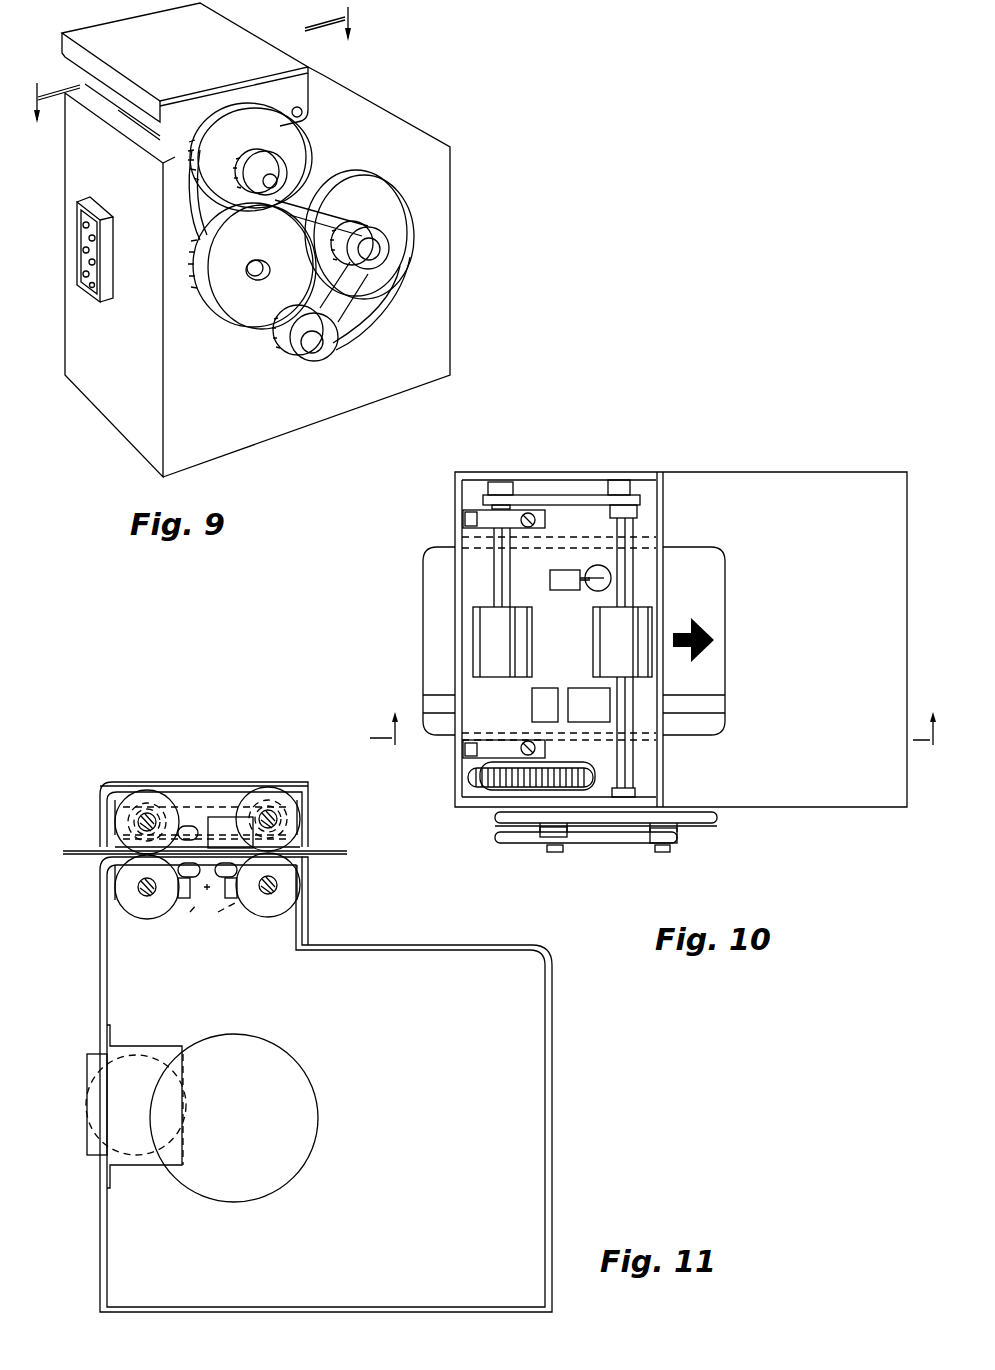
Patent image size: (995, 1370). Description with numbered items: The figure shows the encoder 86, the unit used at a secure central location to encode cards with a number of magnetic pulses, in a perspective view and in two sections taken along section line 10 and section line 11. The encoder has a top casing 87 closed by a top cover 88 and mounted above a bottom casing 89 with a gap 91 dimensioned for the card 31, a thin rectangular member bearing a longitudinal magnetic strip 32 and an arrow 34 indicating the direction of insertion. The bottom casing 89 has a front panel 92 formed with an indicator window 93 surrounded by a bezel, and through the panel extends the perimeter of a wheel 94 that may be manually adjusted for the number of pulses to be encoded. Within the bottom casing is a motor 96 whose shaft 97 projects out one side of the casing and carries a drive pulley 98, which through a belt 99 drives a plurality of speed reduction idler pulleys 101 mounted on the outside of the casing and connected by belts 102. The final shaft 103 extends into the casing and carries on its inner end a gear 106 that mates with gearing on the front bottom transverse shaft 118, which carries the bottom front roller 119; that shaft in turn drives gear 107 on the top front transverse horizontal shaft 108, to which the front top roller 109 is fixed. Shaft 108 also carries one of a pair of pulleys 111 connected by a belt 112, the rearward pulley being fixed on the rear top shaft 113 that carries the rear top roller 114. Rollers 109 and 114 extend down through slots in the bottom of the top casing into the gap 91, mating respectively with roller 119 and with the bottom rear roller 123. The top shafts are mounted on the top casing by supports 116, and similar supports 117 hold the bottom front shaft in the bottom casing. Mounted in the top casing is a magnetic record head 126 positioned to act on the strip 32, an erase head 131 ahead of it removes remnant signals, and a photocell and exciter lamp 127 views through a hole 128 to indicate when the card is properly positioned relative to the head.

In FIG. 9, the section line 10— 10 is at (192, 69).
In FIG. 10, the section line 11— 11 is at (653, 728).
In FIG. 10, the card 31 is at (425, 648).
In FIG. 11, the card 31 is at (322, 850).
In FIG. 10, the magnetic strip 32 is at (708, 703).
In FIG. 10, the arrow 34 is at (708, 652).
In FIG. 9, the encoder 86 is at (126, 421).
In FIG. 10, the encoder 86 is at (662, 440).
In FIG. 11, the encoder 86 is at (353, 926).
In FIG. 9, the top casing 87 is at (280, 95).
In FIG. 10, the top casing 87 is at (579, 522).
In FIG. 11, the top casing 87 is at (192, 782).
In FIG. 9, the top cover 88 is at (174, 58).
In FIG. 9, the bottom casing 89 is at (196, 353).
In FIG. 11, the bottom casing 89 is at (125, 965).
In FIG. 9, the gap 91 is at (140, 138).
In FIG. 11, the gap 91 is at (100, 848).
In FIG. 9, the front panel 92 is at (126, 358).
In FIG. 11, the front panel 92 is at (100, 1002).
In FIG. 9, the indicator window 93 is at (107, 280).
In FIG. 11, the indicator window 93 is at (93, 1092).
In FIG. 9, the wheel 94 is at (78, 250).
In FIG. 11, the wheel 94 is at (87, 1103).
In FIG. 11, the motor 96 is at (239, 1118).
In FIG. 9, the shaft 97 is at (315, 347).
In FIG. 9, the drive pulley 98 is at (330, 349).
In FIG. 9, the belt 99 is at (350, 320).
In FIG. 10, the belt 99 is at (690, 824).
In FIG. 9, the speed reduction idler pulleys 101 is at (274, 141).
In FIG. 10, the speed reduction idler pulleys 101 is at (592, 845).
In FIG. 9, the belts 102 is at (198, 212).
In FIG. 9, the final shaft 103 is at (275, 181).
In FIG. 10, the final shaft 103 is at (548, 838).
In FIG. 10, the gear 106 is at (567, 773).
In FIG. 11, the gear 106 is at (210, 920).
In FIG. 10, the gear 107 is at (470, 783).
In FIG. 10, the top front transverse horizontal shaft 108 is at (500, 684).
In FIG. 11, the top front transverse horizontal shaft 108 is at (142, 818).
In FIG. 10, the front top roller 109 is at (502, 642).
In FIG. 11, the front top roller 109 is at (140, 792).
In FIG. 10, the pulleys 111 is at (498, 487).
In FIG. 10, the belt 112 is at (545, 495).
In FIG. 10, the rear top shaft 113 is at (633, 525).
In FIG. 11, the rear top shaft 113 is at (272, 818).
In FIG. 10, the rear top roller 114 is at (622, 642).
In FIG. 11, the rear top roller 114 is at (248, 800).
In FIG. 10, the supports 116 is at (482, 510).
In FIG. 11, the supports 116 is at (186, 820).
In FIG. 11, the supports 117 is at (228, 905).
In FIG. 11, the bottom front shaft 118 is at (146, 890).
In FIG. 11, the bottom front roller 119 is at (186, 905).
In FIG. 11, the roller 123 is at (268, 905).
In FIG. 10, the magnetic record head 126 is at (593, 693).
In FIG. 11, the magnetic record head 126 is at (228, 822).
In FIG. 10, the photocell and exciter lamp 127 is at (565, 570).
In FIG. 10, the hole 128 is at (600, 585).
In FIG. 10, the erase head 131 is at (542, 700).